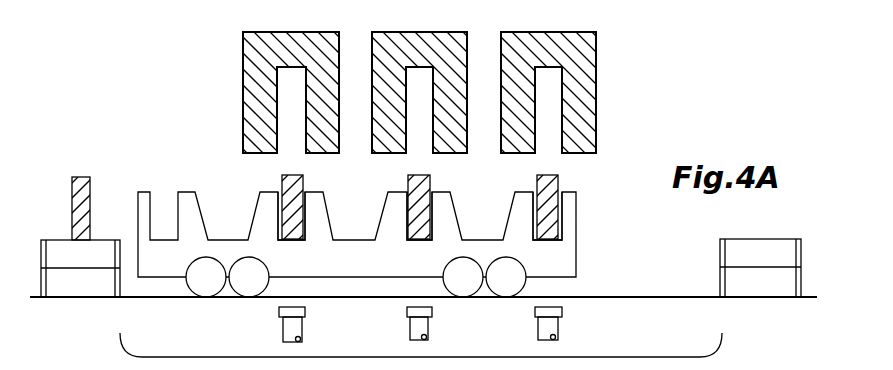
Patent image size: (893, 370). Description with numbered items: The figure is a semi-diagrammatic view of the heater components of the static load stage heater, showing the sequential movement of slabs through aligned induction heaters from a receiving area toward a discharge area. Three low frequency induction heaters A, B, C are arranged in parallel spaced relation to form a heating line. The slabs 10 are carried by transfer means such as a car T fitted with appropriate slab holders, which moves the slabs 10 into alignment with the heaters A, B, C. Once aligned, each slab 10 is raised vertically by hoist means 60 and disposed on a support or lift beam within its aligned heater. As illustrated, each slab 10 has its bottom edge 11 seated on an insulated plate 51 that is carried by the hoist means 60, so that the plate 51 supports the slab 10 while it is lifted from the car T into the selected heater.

The induction heater A is at (285, 38).
The induction heater B is at (420, 38).
The induction heater C is at (552, 38).
The slab 10 is at (90, 186).
The bottom edge 11 is at (290, 240).
The car T is at (567, 248).
The insulated plate 51 is at (305, 312).
The hoist means 60 is at (284, 330).